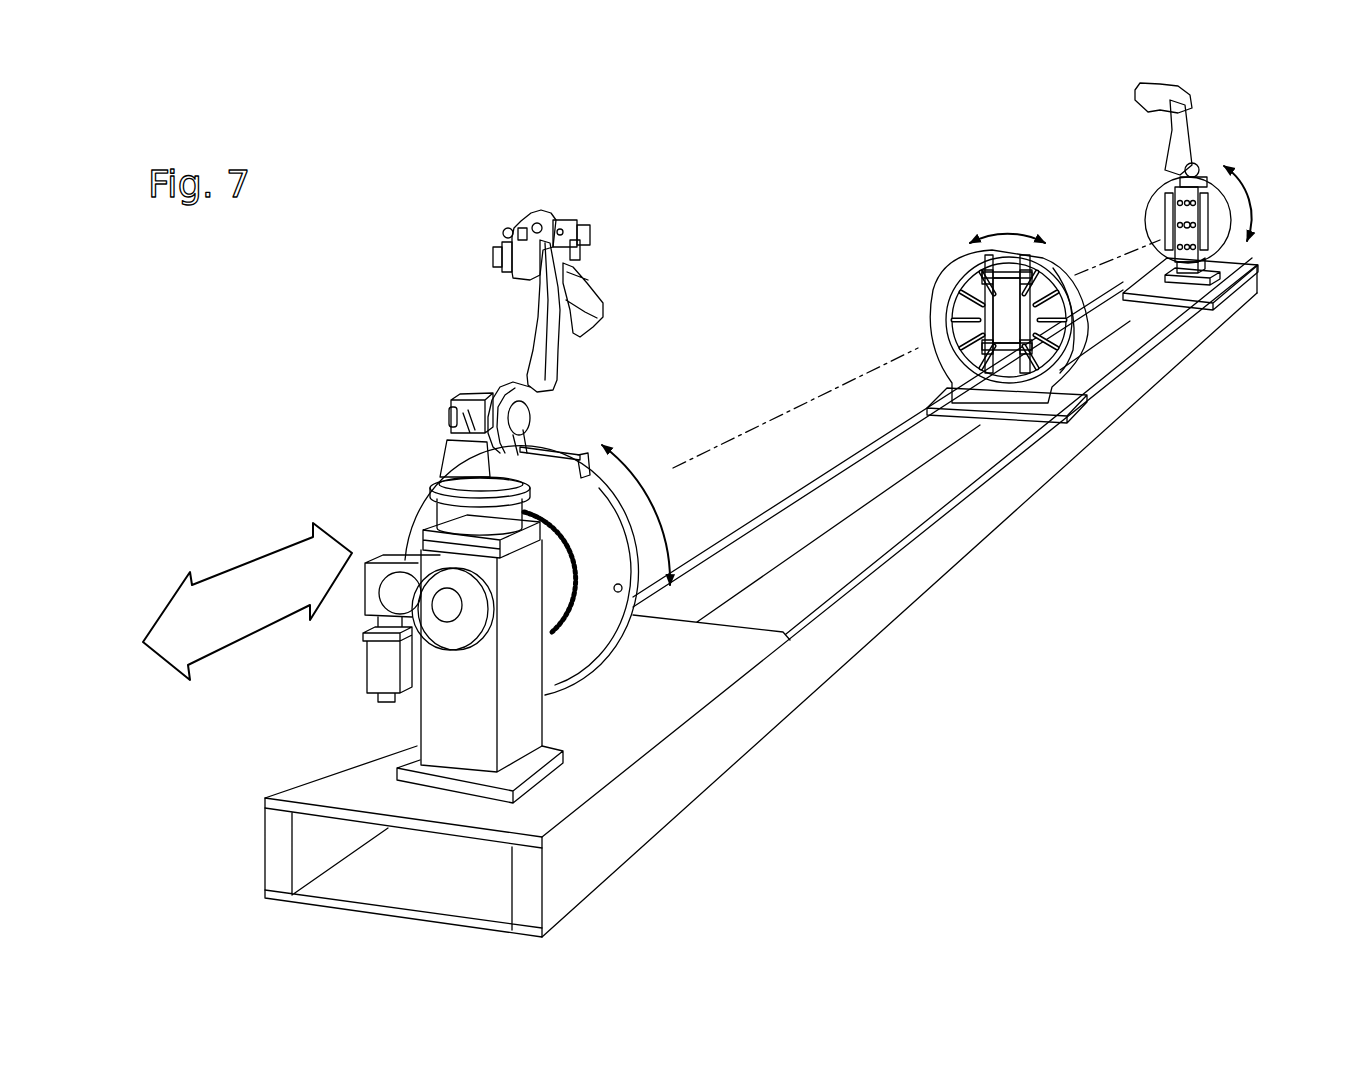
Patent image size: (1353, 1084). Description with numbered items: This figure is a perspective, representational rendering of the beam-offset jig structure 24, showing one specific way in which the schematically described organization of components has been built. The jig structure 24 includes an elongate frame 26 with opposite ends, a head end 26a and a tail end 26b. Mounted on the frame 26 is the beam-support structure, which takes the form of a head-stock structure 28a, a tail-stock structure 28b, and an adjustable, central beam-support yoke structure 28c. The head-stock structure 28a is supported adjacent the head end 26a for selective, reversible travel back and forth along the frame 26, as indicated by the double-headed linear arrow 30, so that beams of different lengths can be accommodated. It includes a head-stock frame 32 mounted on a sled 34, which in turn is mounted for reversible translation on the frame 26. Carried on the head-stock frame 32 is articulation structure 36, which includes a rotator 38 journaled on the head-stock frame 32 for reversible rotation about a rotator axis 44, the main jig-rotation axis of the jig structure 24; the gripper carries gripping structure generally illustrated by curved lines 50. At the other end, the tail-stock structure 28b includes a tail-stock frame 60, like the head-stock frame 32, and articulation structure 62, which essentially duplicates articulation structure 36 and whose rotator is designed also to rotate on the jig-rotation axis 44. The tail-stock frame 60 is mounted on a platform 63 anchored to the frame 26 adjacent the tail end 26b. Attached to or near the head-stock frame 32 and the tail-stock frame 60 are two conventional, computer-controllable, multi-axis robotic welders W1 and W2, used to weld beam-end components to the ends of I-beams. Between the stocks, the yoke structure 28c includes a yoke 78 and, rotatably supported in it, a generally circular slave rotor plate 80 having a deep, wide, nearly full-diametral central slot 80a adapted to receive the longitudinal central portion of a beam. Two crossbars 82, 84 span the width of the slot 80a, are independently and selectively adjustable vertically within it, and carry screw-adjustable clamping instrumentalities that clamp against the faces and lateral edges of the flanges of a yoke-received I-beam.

The beam-offset jig structure 24 is at (471, 343).
The robotic welder W1 is at (472, 248).
The robotic welder W2 is at (1112, 103).
The elongate frame 26 is at (769, 597).
The head end 26a is at (593, 870).
The tail end 26b is at (1230, 303).
The head-stock structure 28a is at (505, 624).
The tail-stock structure 28b is at (1169, 189).
The beam-support yoke structure 28c is at (976, 307).
The double-headed linear arrow 30 is at (253, 573).
The head-stock frame 32 is at (533, 712).
The sled 34 is at (338, 768).
The articulation structure 36 is at (563, 440).
The rotator 38 is at (577, 668).
The rotator axis 44 is at (787, 410).
The gripping structure 50 is at (625, 497).
The tail-stock frame 60 is at (1227, 262).
The articulation structure 62 is at (1250, 193).
The platform 63 is at (1150, 284).
The yoke 78 is at (940, 283).
The slave rotor plate 80 is at (947, 316).
The central slot 80a is at (995, 262).
The crossbar 82 is at (1007, 282).
The crossbar 84 is at (1003, 353).